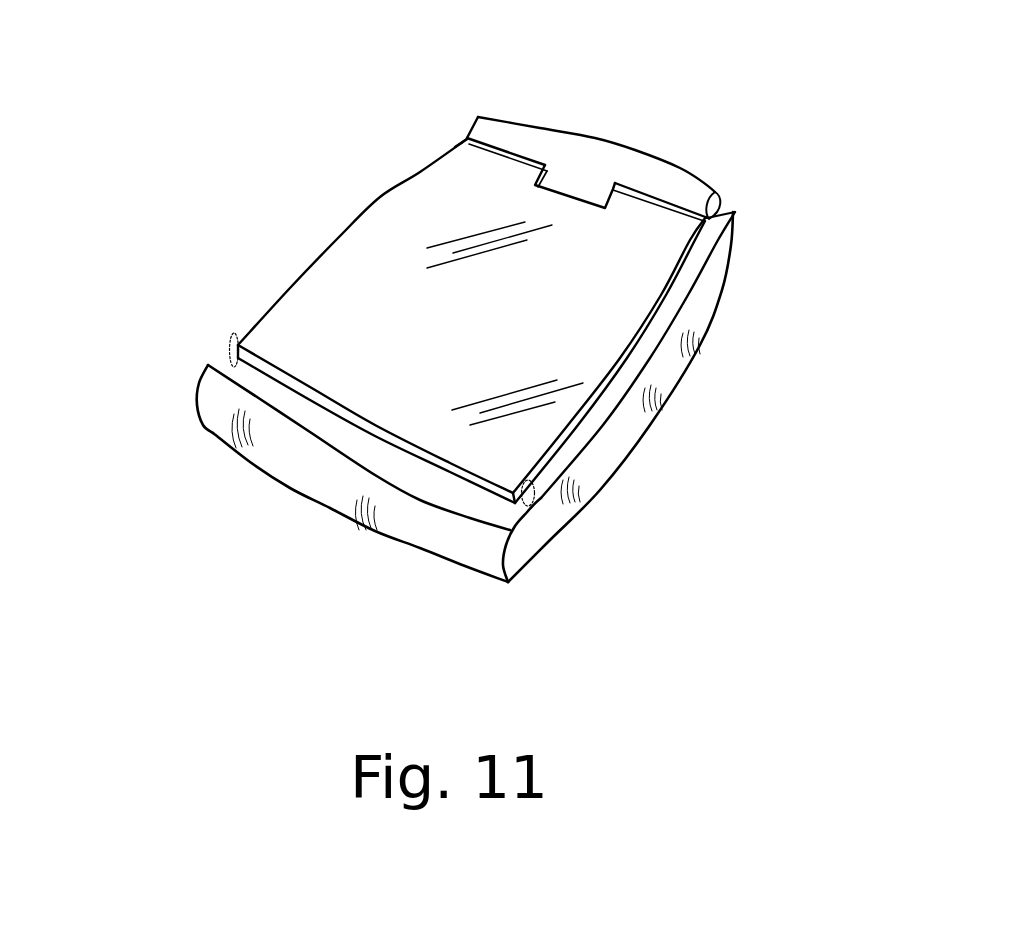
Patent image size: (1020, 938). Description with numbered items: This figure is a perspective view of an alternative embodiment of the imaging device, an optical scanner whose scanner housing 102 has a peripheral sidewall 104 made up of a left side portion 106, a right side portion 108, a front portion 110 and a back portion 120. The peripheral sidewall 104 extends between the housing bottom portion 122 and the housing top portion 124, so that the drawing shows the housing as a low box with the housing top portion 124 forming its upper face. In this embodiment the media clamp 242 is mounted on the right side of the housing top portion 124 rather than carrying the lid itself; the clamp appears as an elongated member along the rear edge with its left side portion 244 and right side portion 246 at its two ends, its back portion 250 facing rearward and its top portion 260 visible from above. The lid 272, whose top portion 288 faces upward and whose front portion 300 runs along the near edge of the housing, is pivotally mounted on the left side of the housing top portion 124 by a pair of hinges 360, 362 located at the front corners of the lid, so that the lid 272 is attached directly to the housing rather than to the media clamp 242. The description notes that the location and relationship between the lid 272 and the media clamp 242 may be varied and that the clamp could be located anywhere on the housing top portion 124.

The scanner housing 102 is at (738, 295).
The peripheral sidewall 104 is at (487, 558).
The left side portion 106 is at (395, 538).
The right side portion 108 is at (734, 210).
The front portion 110 is at (590, 473).
The back portion 120 is at (209, 364).
The housing bottom portion 122 is at (550, 540).
The housing top portion 124 is at (712, 242).
The media clamp 242 is at (525, 142).
The left side portion 244 is at (470, 128).
The right side portion 246 is at (718, 195).
The back portion 250 is at (596, 138).
The top portion 260 is at (596, 154).
The lid 272 is at (393, 248).
The top portion 288 is at (479, 323).
The front portion 300 is at (317, 403).
The hinge 360 is at (535, 505).
The hinge 362 is at (235, 347).